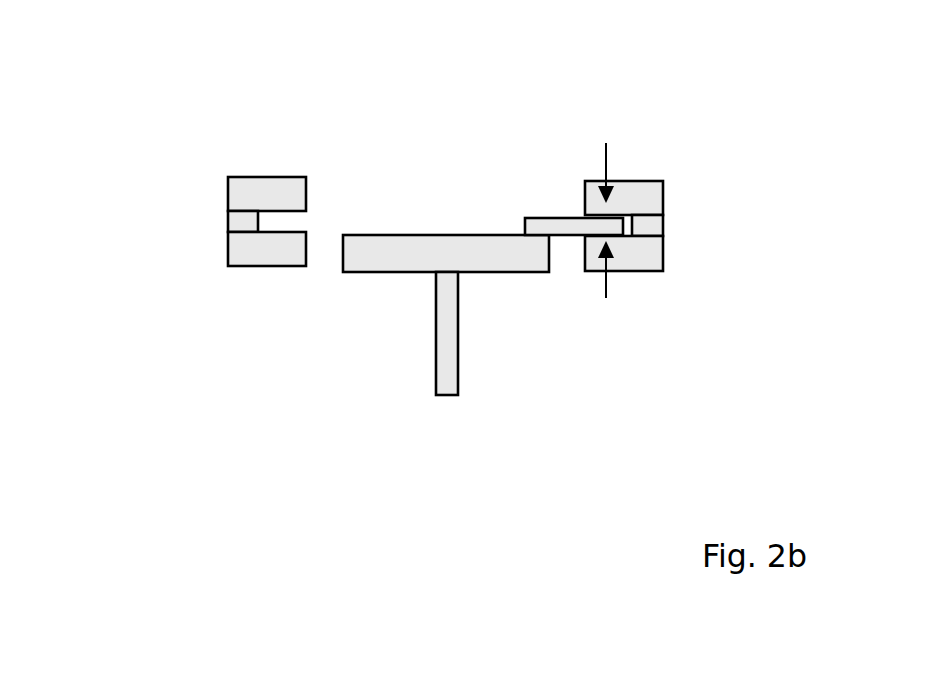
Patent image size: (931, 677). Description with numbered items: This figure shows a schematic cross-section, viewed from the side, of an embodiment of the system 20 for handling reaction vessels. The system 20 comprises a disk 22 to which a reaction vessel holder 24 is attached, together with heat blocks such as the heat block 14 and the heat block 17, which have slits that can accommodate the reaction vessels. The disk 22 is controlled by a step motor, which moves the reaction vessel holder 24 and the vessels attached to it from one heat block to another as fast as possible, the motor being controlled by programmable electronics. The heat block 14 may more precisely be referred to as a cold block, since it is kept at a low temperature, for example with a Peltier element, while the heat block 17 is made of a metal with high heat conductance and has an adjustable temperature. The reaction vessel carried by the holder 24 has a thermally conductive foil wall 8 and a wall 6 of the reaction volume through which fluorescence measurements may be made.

The system 20 is at (182, 397).
The heat block 17 is at (228, 204).
The disk 22 is at (481, 190).
The reaction vessel holder 24 is at (533, 218).
The heat block 14 is at (663, 211).
The wall 8 is at (606, 155).
The wall 6 is at (605, 290).